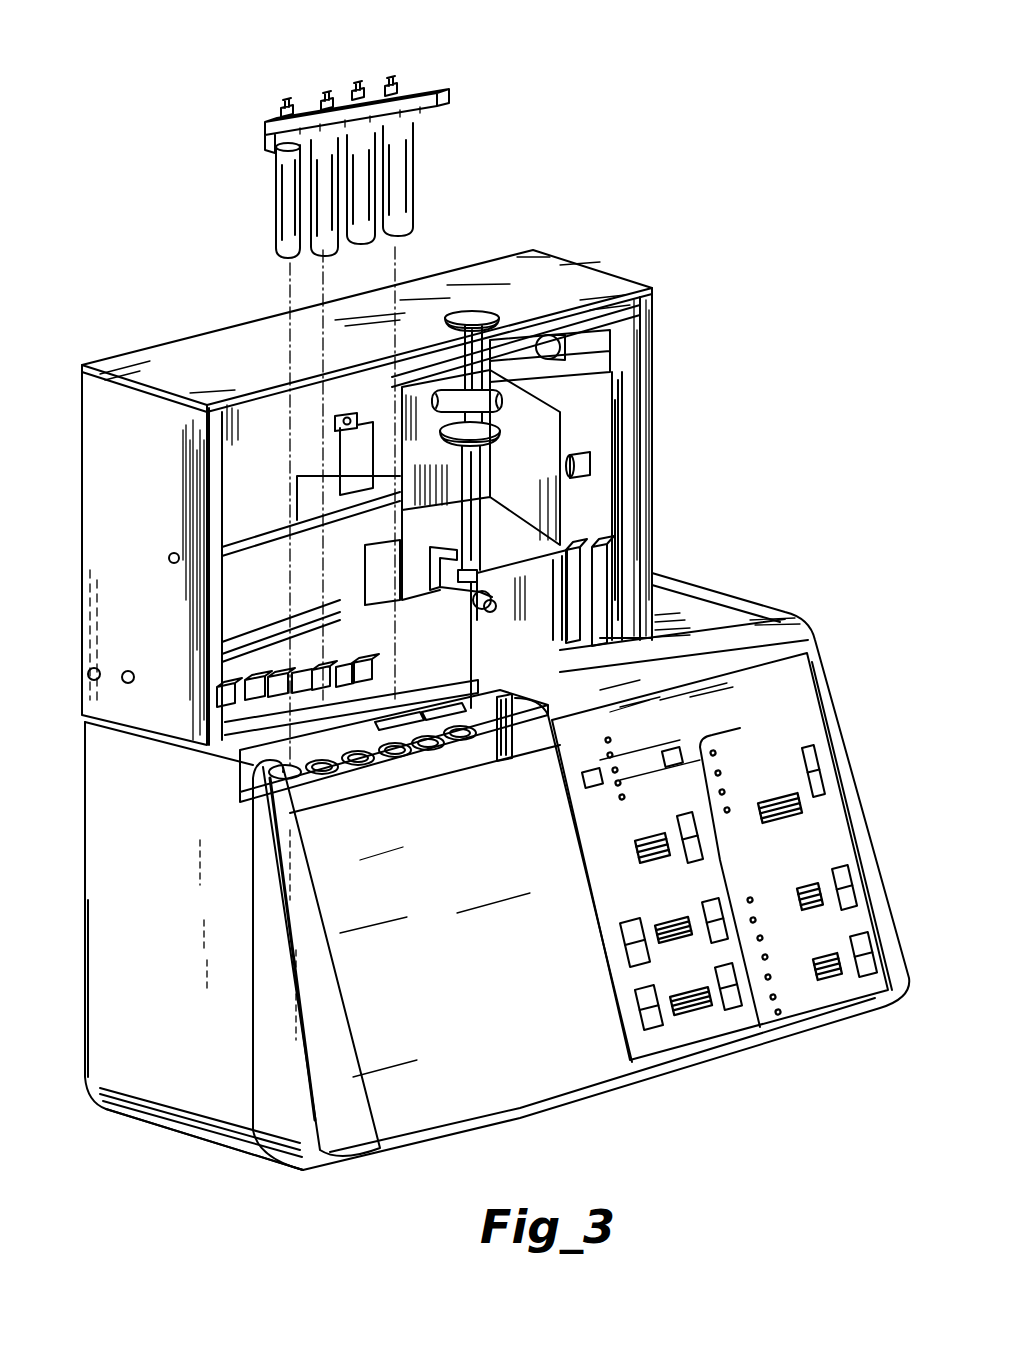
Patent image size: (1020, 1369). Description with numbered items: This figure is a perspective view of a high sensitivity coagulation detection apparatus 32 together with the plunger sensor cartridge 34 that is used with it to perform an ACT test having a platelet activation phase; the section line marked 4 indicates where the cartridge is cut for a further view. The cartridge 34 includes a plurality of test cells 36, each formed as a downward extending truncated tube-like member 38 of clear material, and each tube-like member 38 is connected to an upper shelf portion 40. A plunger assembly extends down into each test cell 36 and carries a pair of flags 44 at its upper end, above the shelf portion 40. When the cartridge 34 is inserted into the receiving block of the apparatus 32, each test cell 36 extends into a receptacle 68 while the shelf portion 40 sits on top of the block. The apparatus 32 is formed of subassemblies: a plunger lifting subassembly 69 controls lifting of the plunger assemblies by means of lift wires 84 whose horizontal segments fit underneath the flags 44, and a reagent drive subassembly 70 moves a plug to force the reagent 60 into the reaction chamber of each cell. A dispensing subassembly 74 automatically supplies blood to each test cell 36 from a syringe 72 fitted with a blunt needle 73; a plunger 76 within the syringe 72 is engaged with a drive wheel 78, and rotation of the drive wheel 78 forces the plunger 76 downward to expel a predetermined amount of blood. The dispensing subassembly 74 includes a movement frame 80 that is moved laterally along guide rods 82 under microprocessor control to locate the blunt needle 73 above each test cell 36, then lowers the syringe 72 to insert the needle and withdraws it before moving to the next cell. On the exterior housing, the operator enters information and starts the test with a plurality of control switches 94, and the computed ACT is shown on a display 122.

The section line of FIG. 4 is at (362, 270).
The apparatus 32 is at (820, 602).
The plunger sensor cartridge 34 is at (470, 149).
The test cell 36 is at (410, 180).
The tube-like member 38 is at (413, 173).
The upper shelf portion 40 is at (428, 92).
The flags 44 is at (326, 100).
The reagent 60 is at (262, 797).
The receptacle 68 is at (433, 752).
The plunger lifting subassembly 69 is at (173, 1130).
The reagent drive subassembly 70 is at (160, 1013).
The syringe 72 is at (467, 522).
The blunt needle 73 is at (510, 638).
The dispensing subassembly 74 is at (165, 346).
The plunger 76 is at (500, 323).
The drive wheel 78 is at (453, 397).
The movement frame 80 is at (620, 362).
The guide rods 82 is at (243, 632).
The lift wires 84 is at (363, 747).
The control switches 94 is at (820, 783).
The display 122 is at (680, 910).